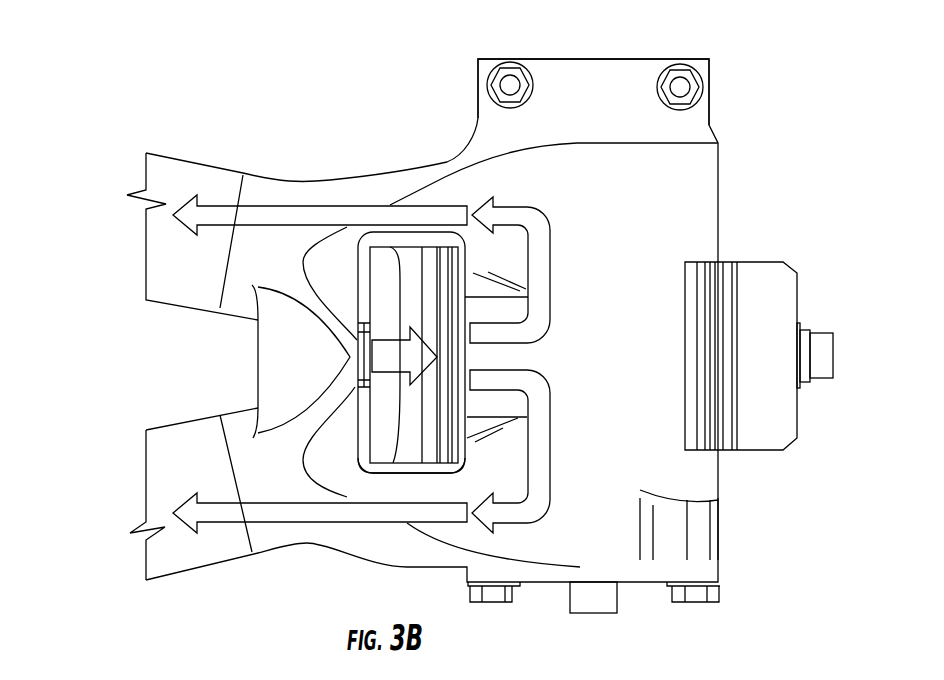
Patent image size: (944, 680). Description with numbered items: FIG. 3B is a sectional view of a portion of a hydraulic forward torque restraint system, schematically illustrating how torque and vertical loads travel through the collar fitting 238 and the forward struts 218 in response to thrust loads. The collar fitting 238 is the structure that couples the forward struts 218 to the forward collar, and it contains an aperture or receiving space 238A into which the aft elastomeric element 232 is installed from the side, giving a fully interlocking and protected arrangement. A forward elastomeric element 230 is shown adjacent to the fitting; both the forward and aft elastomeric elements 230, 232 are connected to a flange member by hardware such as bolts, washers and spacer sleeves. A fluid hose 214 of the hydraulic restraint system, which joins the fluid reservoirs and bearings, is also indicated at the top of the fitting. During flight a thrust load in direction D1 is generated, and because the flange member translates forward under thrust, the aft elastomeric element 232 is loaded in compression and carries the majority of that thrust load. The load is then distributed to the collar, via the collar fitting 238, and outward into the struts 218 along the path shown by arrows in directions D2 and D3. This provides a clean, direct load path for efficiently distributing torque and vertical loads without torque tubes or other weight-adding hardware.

The fluid hose 214 is at (487, 0).
The collar fitting 238 is at (640, 68).
The forward struts 218 is at (198, 269).
The aft elastomeric element 232 is at (408, 425).
The receiving space 238A is at (428, 472).
The forward elastomeric element 230 is at (768, 265).
The thrust load direction D1 is at (404, 356).
The load path direction D2 is at (550, 282).
The load path direction D3 is at (307, 213).